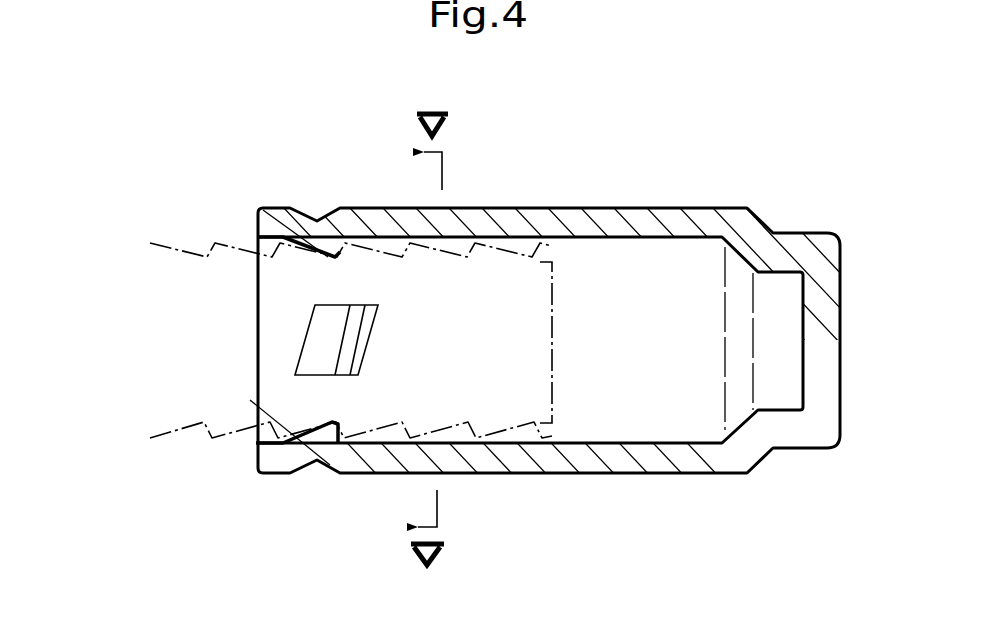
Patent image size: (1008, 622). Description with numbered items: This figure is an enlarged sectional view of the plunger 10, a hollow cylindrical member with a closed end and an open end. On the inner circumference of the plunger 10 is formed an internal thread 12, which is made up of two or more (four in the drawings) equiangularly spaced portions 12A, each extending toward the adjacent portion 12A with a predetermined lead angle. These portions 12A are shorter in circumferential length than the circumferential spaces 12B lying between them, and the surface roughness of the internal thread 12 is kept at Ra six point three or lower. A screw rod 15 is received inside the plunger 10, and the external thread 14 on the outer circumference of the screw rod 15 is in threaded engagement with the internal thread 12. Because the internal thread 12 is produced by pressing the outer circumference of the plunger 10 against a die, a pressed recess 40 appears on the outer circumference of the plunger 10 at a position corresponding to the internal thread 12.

The plunger 10 is at (671, 208).
The internal thread 12 is at (122, 278).
The portions 12A is at (327, 333).
The circumferential spaces 12B is at (300, 387).
The external thread 14 is at (497, 245).
The screw rod 15 is at (553, 287).
The pressed recess 40 is at (311, 208).